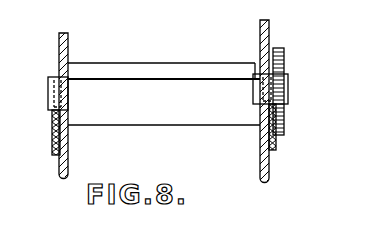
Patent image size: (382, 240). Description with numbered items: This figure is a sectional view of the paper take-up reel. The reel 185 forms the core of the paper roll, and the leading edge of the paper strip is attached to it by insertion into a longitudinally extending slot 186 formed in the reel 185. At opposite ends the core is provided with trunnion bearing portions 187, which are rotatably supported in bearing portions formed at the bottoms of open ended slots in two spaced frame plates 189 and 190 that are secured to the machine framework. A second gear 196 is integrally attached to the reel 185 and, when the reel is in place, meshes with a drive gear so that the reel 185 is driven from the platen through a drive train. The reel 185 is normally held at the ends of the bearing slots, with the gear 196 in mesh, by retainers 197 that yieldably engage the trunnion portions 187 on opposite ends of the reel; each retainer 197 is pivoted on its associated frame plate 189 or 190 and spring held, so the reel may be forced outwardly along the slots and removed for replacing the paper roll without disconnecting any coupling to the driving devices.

The reel 185 is at (166, 64).
The longitudinally extending slot 186 is at (212, 80).
The trunnion bearing portions 187 is at (56, 77).
The frame plate 189 is at (67, 176).
The frame plate 190 is at (269, 175).
The second gear 196 is at (285, 122).
The retainers 197 is at (53, 131).